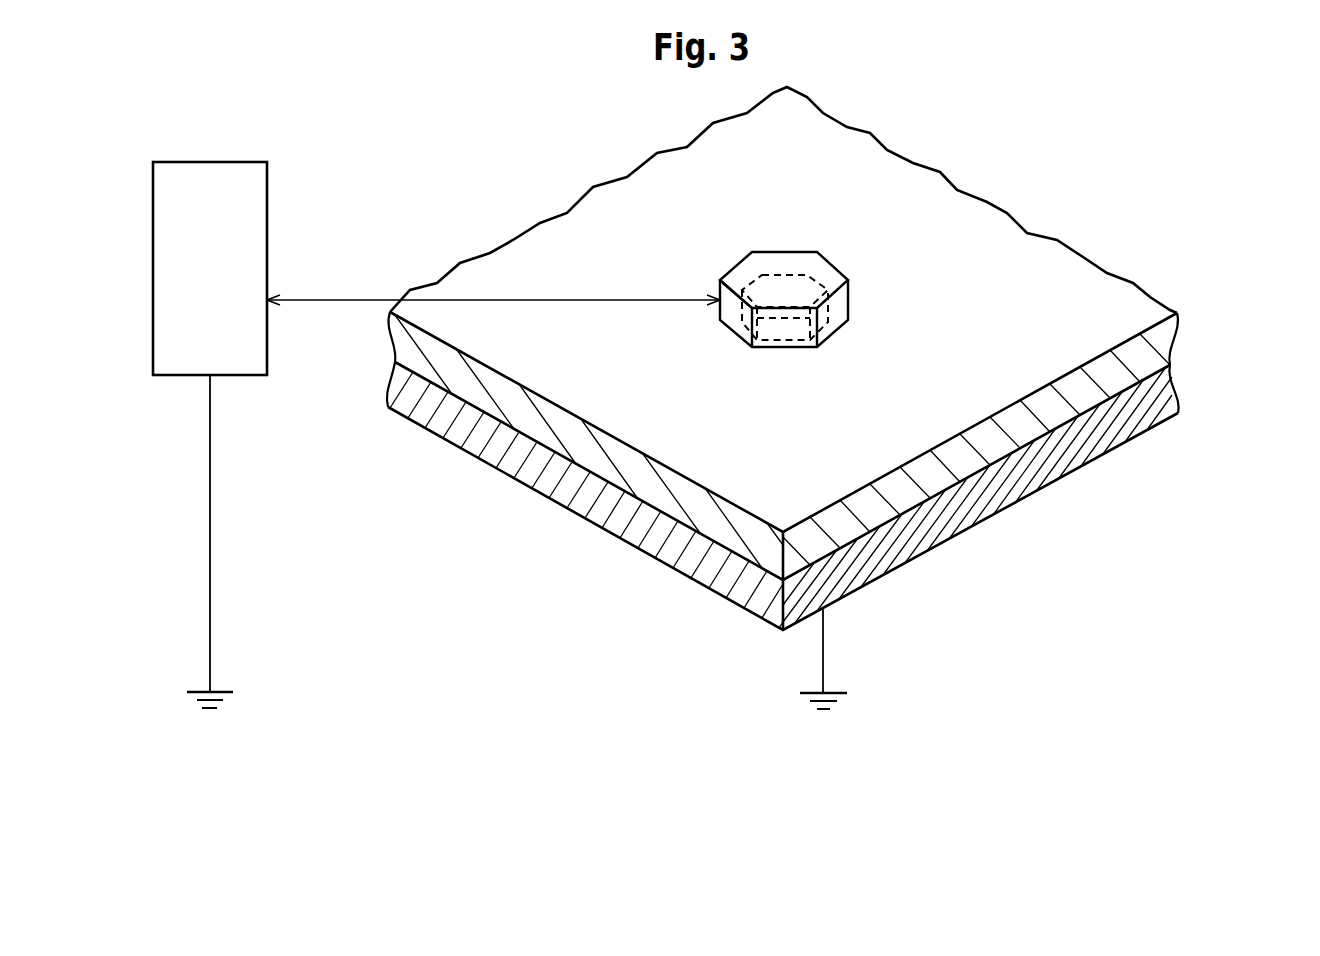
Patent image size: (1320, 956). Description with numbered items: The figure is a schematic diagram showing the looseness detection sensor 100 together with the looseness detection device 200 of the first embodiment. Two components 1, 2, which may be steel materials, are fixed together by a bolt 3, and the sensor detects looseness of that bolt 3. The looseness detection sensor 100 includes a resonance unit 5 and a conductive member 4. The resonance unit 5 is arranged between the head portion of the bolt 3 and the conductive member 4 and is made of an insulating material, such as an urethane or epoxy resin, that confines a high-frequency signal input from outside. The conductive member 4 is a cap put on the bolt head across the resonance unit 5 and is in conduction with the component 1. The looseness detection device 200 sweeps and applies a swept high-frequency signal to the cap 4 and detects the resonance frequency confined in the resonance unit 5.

The component 1 is at (1165, 347).
The component 2 is at (1167, 398).
The bolt 3 is at (843, 303).
The conductive member 4 is at (745, 275).
The resonance unit 5 is at (741, 273).
The looseness detection sensor 100 is at (804, 261).
The looseness detection device 200 is at (210, 162).